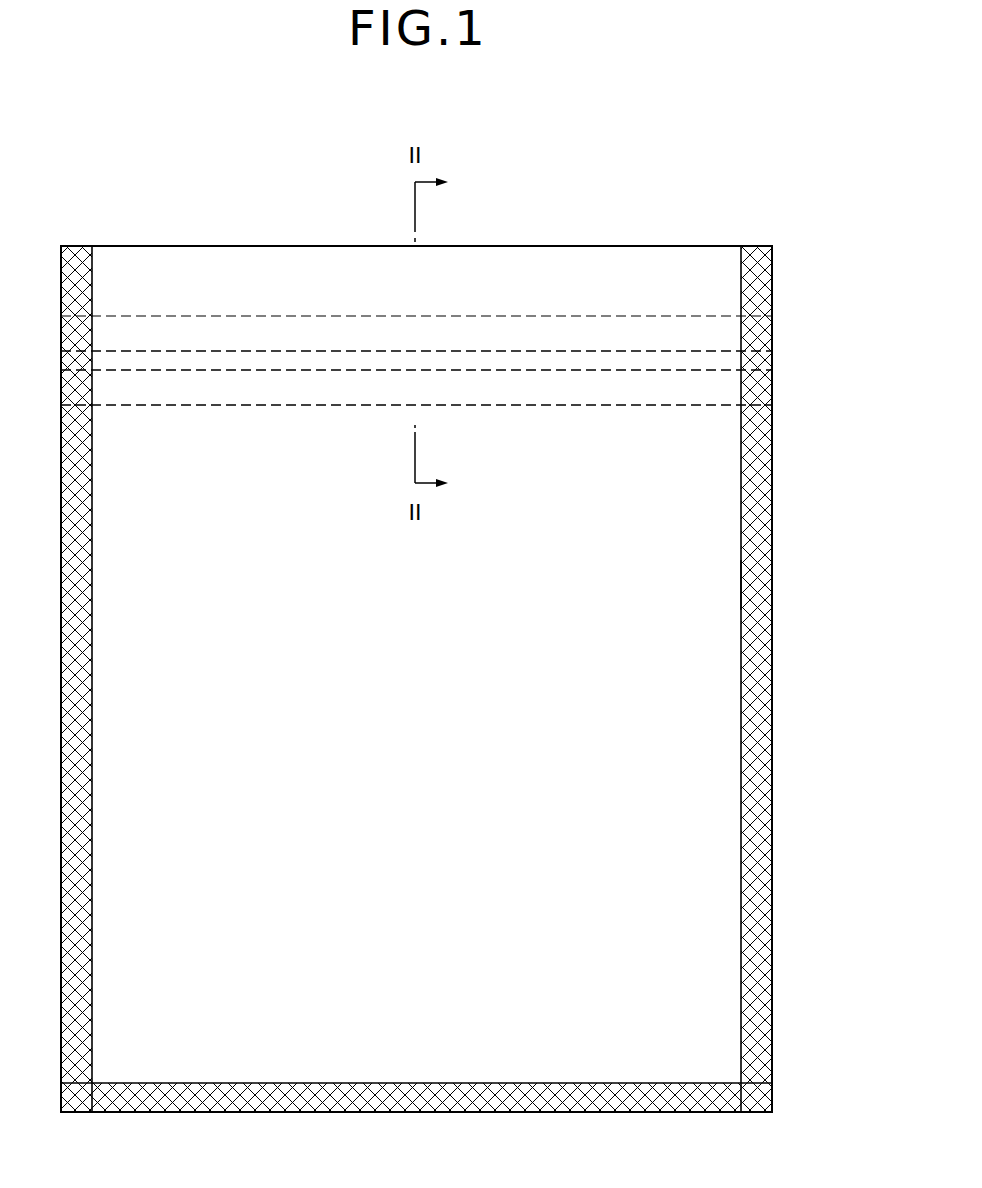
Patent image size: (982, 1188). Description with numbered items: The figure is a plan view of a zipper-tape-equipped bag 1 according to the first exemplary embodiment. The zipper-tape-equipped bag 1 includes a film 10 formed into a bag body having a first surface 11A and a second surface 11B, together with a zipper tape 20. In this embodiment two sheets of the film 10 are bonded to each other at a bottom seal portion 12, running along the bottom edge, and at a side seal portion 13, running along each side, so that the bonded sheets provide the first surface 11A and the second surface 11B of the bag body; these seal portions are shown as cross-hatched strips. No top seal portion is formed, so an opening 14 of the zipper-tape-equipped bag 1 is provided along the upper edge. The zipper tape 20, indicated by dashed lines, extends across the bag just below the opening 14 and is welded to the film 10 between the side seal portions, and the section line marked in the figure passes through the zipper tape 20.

The zipper-tape-equipped bag 1 is at (754, 109).
The film 10 is at (465, 679).
The first surface 11A is at (722, 598).
The second surface 11B is at (722, 647).
The bottom seal portion 12 is at (636, 1100).
The side seal portion 13 is at (758, 888).
The opening 14 is at (593, 246).
The zipper tape 20 is at (680, 333).